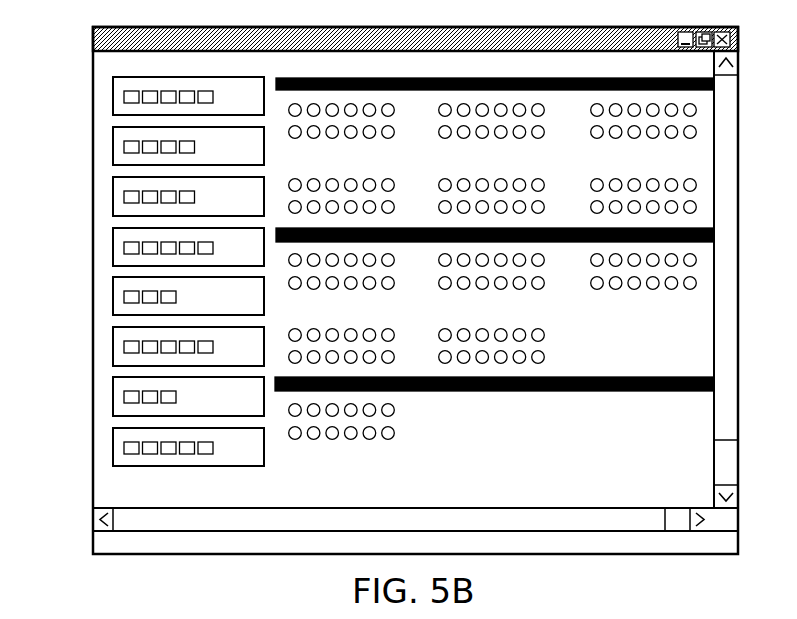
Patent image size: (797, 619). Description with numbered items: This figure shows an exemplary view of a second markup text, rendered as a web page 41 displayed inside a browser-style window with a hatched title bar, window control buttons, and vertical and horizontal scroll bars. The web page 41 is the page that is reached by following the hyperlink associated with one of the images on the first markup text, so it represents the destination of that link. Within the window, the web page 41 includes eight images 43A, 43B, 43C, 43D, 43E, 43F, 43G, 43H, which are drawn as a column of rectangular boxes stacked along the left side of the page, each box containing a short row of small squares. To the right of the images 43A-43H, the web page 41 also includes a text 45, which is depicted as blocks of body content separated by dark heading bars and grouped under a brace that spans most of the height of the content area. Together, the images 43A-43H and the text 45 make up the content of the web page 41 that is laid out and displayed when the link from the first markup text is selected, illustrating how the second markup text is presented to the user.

The web page 41 is at (720, 27).
The image 43A is at (117, 84).
The image 43B is at (117, 134).
The image 43C is at (117, 184).
The image 43D is at (117, 235).
The image 43E is at (117, 284).
The image 43F is at (117, 334).
The image 43G is at (117, 384).
The image 43H is at (117, 435).
The text 45 is at (755, 78).